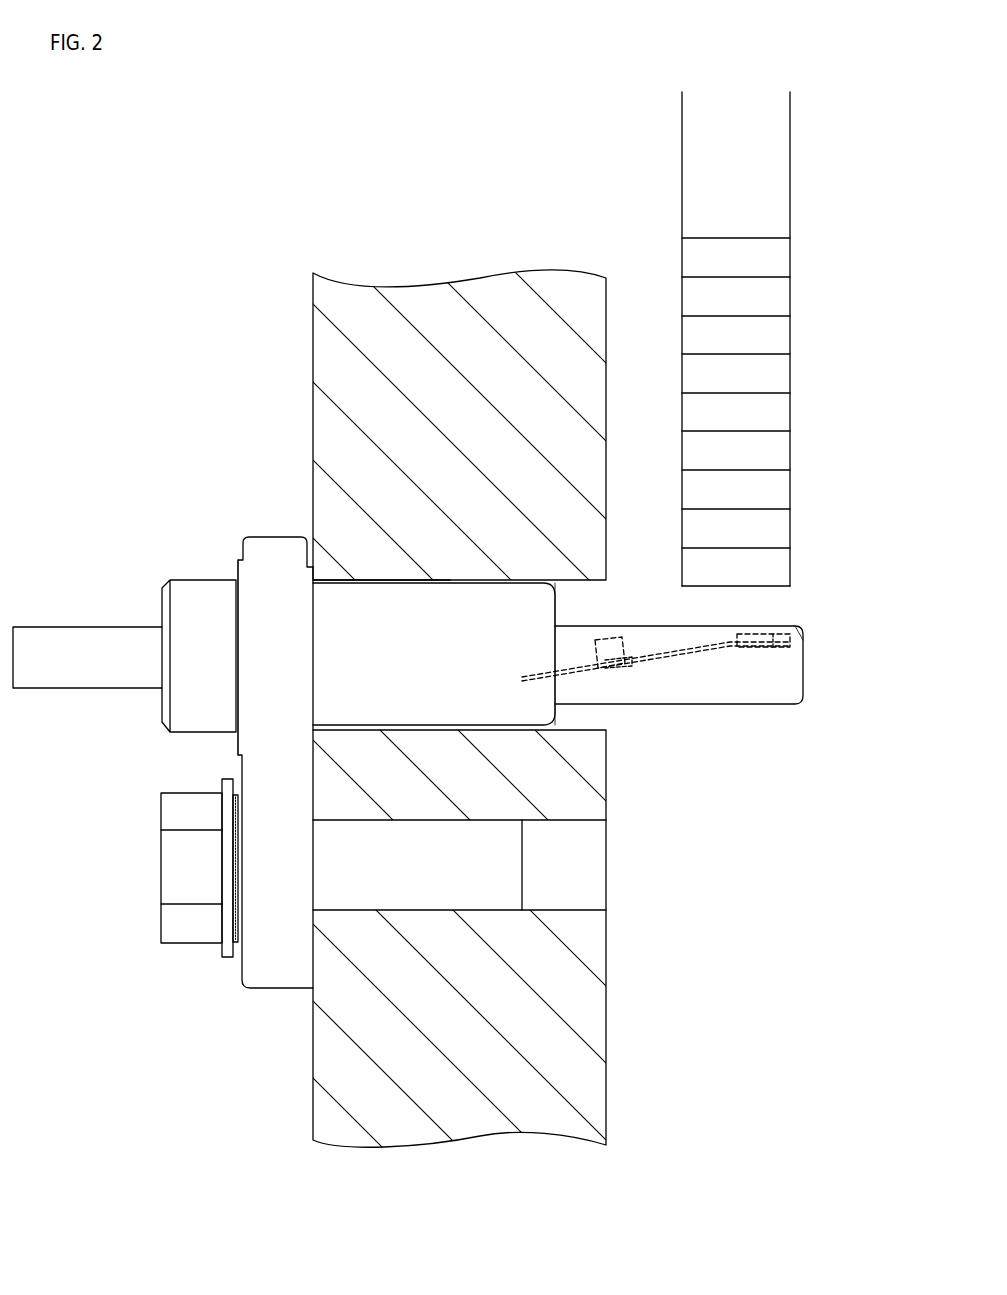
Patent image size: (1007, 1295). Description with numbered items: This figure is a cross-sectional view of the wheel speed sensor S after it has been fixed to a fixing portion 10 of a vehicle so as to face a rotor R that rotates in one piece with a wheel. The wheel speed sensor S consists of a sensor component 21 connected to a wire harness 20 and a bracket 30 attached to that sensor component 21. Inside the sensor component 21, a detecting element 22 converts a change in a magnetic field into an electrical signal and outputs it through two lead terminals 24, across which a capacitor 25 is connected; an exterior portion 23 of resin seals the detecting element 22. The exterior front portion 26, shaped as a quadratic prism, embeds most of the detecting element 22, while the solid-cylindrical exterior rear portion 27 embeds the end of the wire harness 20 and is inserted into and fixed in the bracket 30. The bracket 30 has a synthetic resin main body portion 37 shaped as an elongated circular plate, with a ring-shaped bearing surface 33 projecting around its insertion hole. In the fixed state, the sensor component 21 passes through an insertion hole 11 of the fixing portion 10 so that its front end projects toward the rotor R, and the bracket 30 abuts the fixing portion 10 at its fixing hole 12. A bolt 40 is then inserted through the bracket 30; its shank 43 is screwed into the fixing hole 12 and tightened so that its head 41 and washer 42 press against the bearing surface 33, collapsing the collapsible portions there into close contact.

The fixing portion 10 is at (347, 400).
The insertion hole 11 is at (406, 583).
The fixing hole 12 is at (388, 905).
The wire harness 20 is at (68, 633).
The sensor component 21 is at (777, 693).
The detecting element 22 is at (767, 627).
The exterior portion 23 is at (450, 695).
The lead terminals 24 is at (660, 655).
The capacitor 25 is at (607, 670).
The exterior front portion 26 is at (752, 695).
The exterior rear portion 27 is at (357, 647).
The bracket 30 is at (268, 880).
The bearing surface 33 is at (222, 822).
The main body portion 37 is at (260, 668).
The bolt 40 is at (172, 846).
The head 41 is at (170, 874).
The washer 42 is at (227, 948).
The shank 43 is at (494, 897).
The rotor R is at (763, 381).
The wheel speed sensor S is at (758, 596).